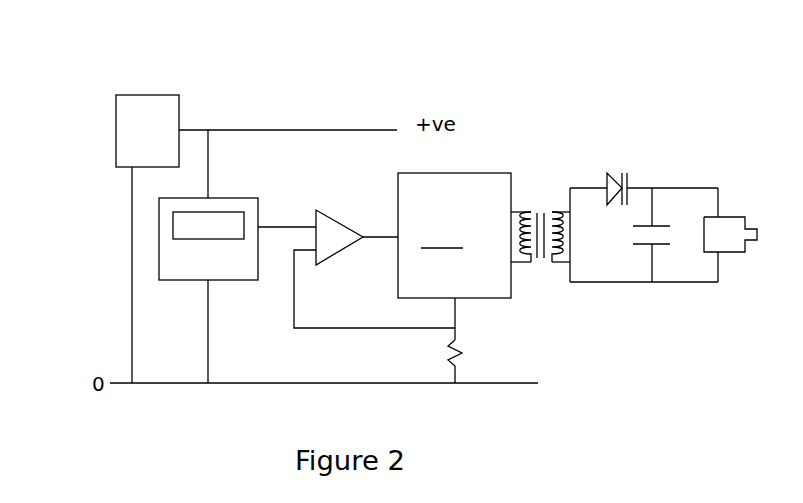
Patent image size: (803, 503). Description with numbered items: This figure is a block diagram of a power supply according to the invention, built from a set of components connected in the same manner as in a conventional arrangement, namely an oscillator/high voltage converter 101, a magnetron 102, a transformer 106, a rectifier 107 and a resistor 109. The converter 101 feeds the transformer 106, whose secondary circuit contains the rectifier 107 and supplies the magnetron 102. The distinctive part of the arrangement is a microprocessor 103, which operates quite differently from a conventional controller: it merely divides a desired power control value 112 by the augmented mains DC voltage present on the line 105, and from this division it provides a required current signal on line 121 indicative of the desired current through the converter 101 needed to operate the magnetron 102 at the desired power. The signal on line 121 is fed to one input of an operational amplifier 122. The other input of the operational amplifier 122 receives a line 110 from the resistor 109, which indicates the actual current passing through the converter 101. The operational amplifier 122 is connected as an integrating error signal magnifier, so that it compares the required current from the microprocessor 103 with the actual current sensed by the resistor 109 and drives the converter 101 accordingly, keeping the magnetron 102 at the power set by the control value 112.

The oscillator/high voltage converter 101 is at (454, 235).
The magnetron 102 is at (725, 217).
The microprocessor 103 is at (159, 258).
The line 105 is at (233, 130).
The transformer 106 is at (527, 208).
The rectifier 107 is at (613, 172).
The resistor 109 is at (459, 352).
The line 110 is at (382, 328).
The desired power control value 112 is at (173, 228).
The line 121 is at (287, 225).
The operational amplifier 122 is at (342, 218).